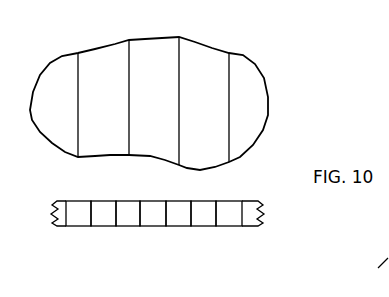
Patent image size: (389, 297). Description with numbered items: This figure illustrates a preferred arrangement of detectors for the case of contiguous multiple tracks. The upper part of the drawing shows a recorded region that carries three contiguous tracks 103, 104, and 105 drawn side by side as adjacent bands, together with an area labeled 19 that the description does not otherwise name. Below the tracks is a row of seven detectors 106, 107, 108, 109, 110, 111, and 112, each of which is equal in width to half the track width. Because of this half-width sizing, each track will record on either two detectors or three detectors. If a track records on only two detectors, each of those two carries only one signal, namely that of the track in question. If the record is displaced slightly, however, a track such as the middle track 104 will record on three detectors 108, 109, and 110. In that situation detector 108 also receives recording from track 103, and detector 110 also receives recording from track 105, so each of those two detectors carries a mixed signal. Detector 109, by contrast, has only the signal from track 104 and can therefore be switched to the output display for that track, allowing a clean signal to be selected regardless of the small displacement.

The article (sole blank) 19 is at (237, 110).
The track 103 is at (97, 105).
The track 104 is at (147, 97).
The track 105 is at (198, 101).
The detector 106 is at (78, 227).
The detector 107 is at (102, 227).
The detector 108 is at (128, 227).
The detector 109 is at (153, 227).
The detector 110 is at (178, 227).
The detector 111 is at (203, 227).
The detector 112 is at (230, 227).